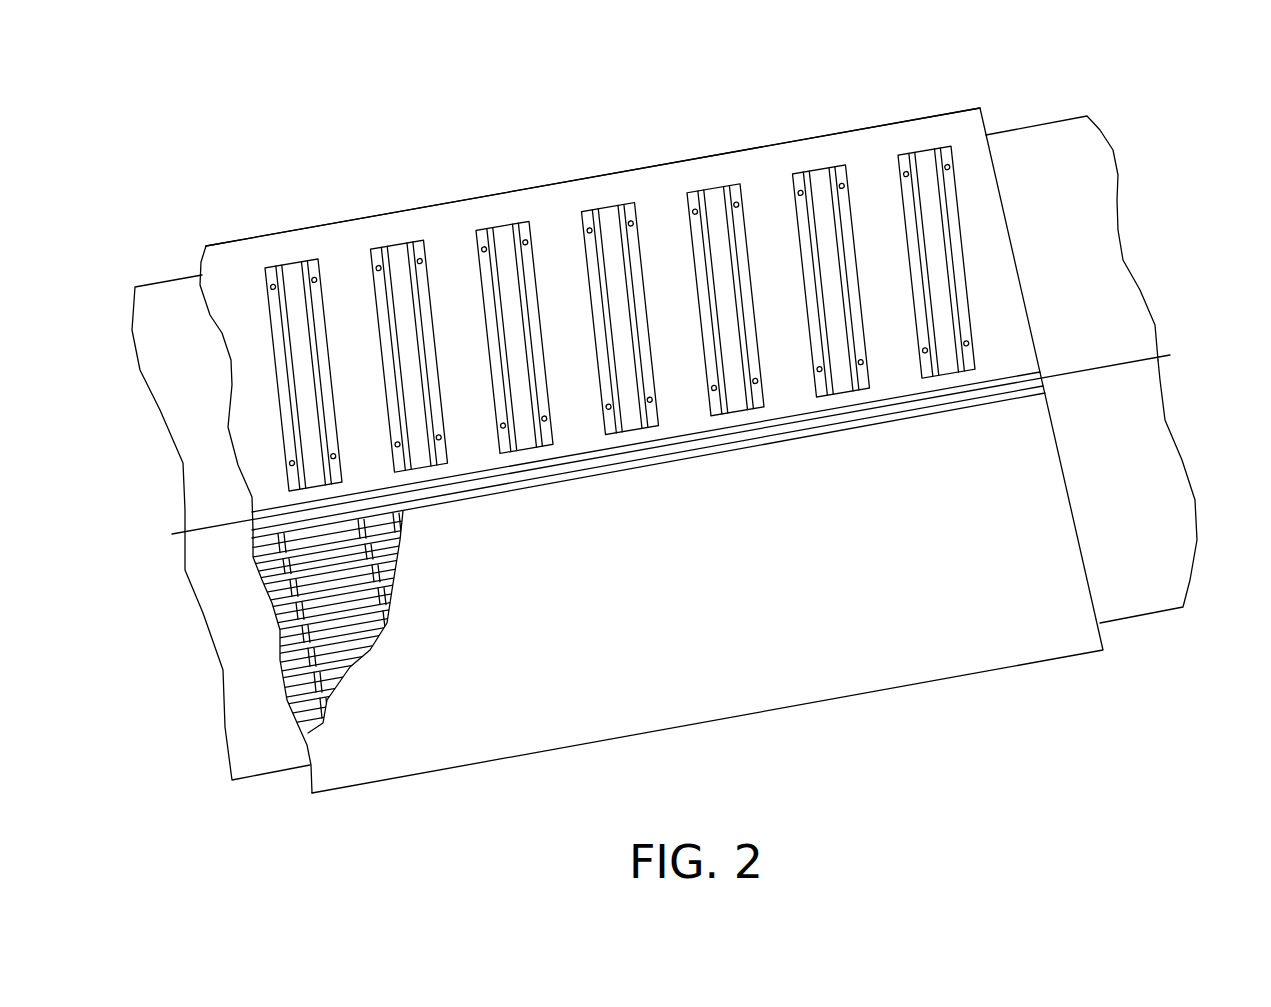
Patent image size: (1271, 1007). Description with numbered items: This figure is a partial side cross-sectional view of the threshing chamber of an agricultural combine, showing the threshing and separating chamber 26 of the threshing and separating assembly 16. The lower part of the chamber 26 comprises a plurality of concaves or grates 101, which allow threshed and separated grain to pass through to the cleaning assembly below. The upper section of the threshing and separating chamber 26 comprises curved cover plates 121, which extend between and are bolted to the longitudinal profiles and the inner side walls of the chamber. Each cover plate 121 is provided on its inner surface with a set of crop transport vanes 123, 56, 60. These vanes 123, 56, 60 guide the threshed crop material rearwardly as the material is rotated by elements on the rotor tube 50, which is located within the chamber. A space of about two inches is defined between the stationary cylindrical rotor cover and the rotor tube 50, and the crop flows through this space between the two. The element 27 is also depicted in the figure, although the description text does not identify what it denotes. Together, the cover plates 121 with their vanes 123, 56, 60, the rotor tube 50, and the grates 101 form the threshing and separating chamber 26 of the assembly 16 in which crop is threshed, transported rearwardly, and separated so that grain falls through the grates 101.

The threshing and separating assembly 16 is at (872, 730).
The threshing and separating chamber 26 is at (877, 122).
The second plate 27 is at (1145, 463).
The rotor tube 50 is at (1100, 277).
The crop transport vane 56 is at (534, 321).
The crop transport vane 60 is at (312, 448).
The concaves or grates 101 is at (362, 623).
The curved cover plate 121 is at (590, 194).
The crop transport vane 123 is at (402, 300).